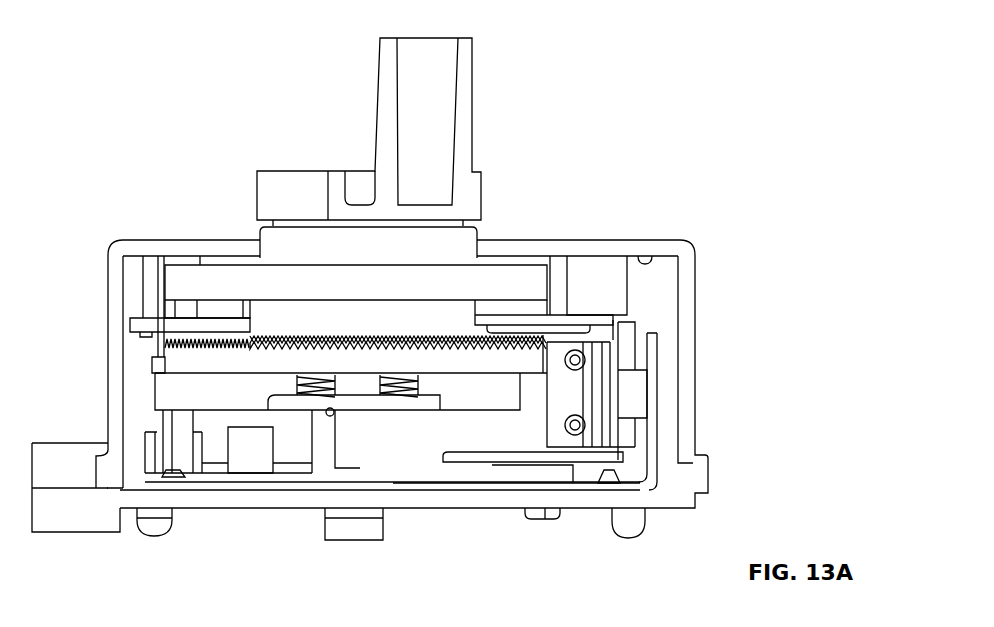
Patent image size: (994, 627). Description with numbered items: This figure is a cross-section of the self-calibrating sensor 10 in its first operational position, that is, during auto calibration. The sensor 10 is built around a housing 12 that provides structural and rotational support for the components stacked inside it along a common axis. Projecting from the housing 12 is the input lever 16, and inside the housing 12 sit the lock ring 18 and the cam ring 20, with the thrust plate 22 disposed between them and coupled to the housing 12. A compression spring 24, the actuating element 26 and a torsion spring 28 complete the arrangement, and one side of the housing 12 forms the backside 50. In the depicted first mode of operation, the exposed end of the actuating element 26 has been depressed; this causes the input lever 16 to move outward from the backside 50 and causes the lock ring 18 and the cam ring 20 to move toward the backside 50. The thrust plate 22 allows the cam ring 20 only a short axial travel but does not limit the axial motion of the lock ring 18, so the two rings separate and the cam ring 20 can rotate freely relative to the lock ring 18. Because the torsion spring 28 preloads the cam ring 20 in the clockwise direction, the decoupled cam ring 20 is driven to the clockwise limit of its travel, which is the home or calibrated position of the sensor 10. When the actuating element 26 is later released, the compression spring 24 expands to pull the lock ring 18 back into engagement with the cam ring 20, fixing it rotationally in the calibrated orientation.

The self-calibrating sensor 10 is at (173, 50).
The housing 12 is at (690, 282).
The input lever 16 is at (476, 130).
The lock ring 18 is at (488, 273).
The cam ring 20 is at (463, 403).
The thrust plate 22 is at (133, 326).
The compression spring 24 is at (428, 400).
The actuating element 26 is at (373, 520).
The torsion spring 28 is at (327, 414).
The backside 50 is at (640, 254).